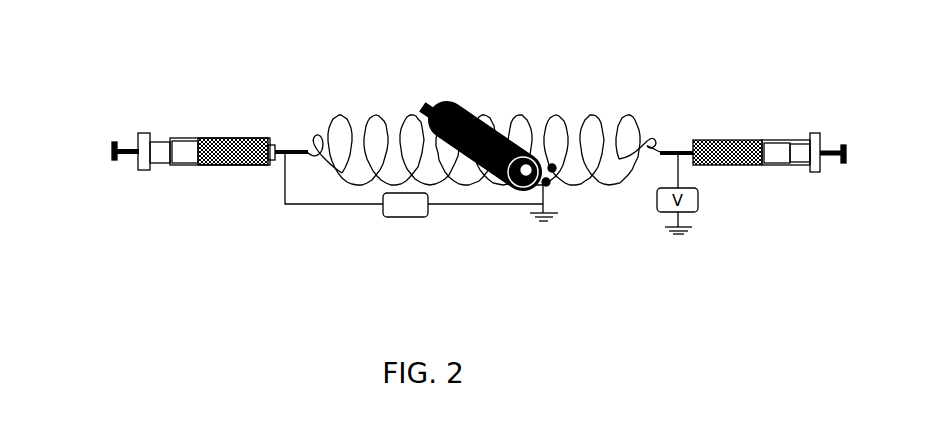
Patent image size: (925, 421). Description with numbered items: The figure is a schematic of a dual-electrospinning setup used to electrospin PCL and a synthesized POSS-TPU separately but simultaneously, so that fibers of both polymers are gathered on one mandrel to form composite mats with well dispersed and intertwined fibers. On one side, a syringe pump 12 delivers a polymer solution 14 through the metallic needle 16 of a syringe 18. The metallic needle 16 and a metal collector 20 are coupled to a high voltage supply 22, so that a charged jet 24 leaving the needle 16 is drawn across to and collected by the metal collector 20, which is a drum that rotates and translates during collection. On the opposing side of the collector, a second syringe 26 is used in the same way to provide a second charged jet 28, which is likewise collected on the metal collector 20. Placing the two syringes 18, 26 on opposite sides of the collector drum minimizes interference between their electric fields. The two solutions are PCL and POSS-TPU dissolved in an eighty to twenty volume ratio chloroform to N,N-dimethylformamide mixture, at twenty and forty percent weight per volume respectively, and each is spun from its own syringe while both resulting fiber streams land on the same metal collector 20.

The syringe pump 12 is at (110, 147).
The polymer solution 14 is at (228, 160).
The metallic needle 16 is at (233, 140).
The syringe 18 is at (296, 150).
The metal collector 20 is at (500, 133).
The high voltage supply 22 is at (404, 217).
The charged jet 24 is at (343, 120).
The second syringe 26 is at (728, 140).
The second charged jet 28 is at (628, 127).